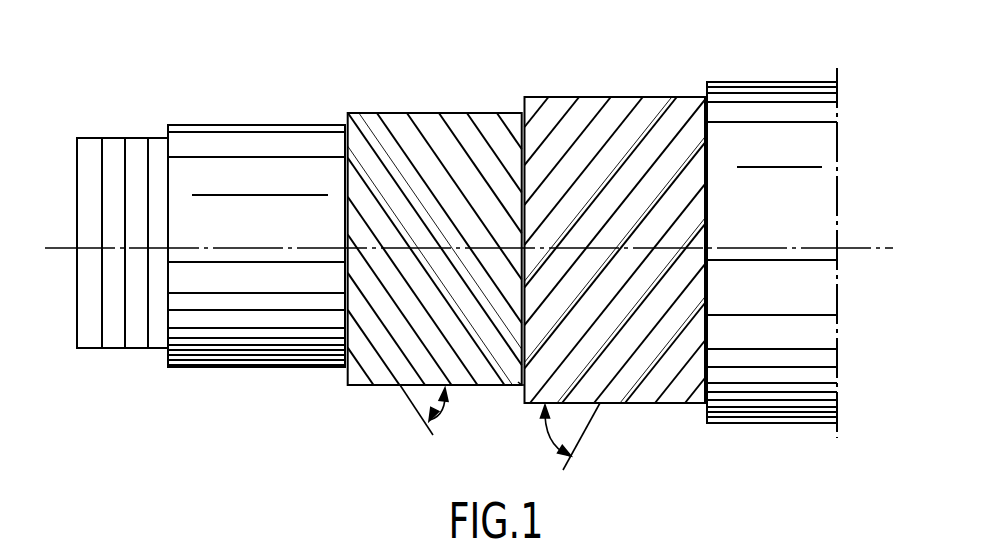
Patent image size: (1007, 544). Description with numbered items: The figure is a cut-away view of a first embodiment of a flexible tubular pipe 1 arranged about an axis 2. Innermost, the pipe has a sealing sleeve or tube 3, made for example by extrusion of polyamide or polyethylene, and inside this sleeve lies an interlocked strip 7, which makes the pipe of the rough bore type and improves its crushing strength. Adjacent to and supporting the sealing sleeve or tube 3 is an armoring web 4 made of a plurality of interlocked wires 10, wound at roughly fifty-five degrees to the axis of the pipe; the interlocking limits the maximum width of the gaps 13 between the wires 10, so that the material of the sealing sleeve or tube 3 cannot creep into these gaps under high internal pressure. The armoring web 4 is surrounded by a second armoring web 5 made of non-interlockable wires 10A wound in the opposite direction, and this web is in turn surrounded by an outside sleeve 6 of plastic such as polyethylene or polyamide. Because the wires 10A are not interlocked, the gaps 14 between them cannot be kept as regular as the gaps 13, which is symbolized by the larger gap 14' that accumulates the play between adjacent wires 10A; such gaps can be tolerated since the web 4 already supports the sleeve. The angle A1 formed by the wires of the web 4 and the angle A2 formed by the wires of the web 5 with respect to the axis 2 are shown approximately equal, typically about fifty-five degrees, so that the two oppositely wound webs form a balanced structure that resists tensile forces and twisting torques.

The flexible tubular pipe 1 is at (328, 386).
The axis 2 is at (112, 245).
The sealing sleeve or tube 3 is at (232, 181).
The armoring web 4 is at (438, 204).
The armoring web 5 is at (615, 238).
The shaft section 6 is at (770, 154).
The interlocked strip 7 is at (95, 348).
The wires 10 is at (362, 113).
The gaps 13 is at (378, 113).
The gaps 14 is at (615, 219).
The wires 10A is at (567, 97).
The angle A1 is at (437, 415).
The angle A2 is at (558, 439).
The gap 14' is at (495, 427).